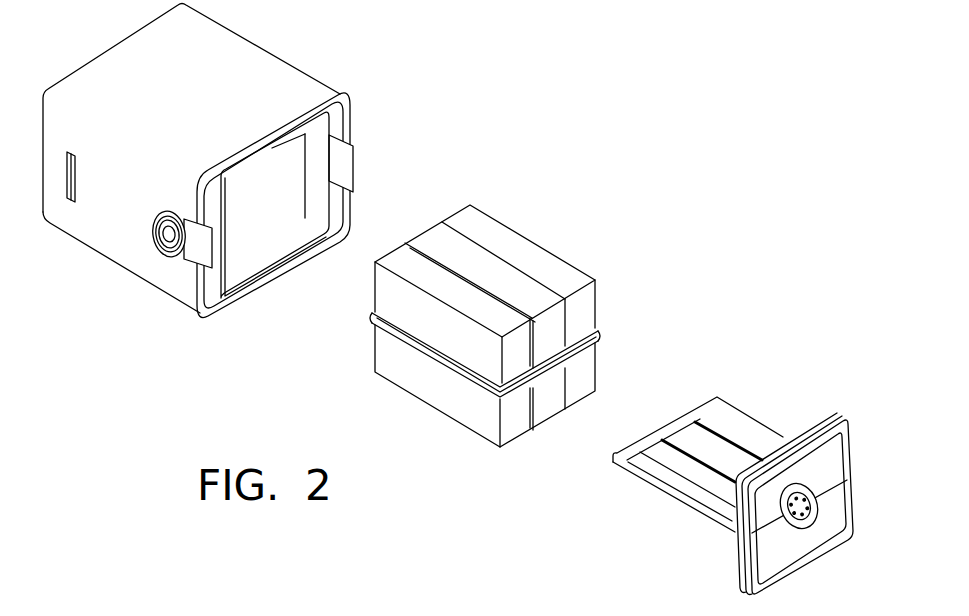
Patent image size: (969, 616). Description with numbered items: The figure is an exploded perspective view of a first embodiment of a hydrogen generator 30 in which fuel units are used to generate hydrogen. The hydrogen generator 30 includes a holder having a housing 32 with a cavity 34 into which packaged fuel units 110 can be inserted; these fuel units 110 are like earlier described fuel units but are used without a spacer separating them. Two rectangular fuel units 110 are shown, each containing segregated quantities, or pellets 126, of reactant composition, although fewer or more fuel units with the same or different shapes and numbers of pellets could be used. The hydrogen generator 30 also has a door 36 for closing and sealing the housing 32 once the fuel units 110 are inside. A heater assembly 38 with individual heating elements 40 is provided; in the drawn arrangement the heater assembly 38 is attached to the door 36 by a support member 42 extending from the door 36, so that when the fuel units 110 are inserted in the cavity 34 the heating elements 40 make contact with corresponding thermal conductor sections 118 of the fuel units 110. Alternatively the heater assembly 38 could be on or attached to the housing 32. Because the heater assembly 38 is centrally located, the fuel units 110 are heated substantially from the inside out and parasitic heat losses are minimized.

The hydrogen generator 30 is at (314, 38).
The housing 32 is at (347, 122).
The cavity 34 is at (266, 222).
The fuel units 110 is at (521, 227).
The pellets 126 is at (387, 292).
The thermal conductor sections 118 is at (507, 392).
The support member 42 is at (683, 418).
The heater assembly 38 is at (744, 407).
The heating elements 40 is at (690, 438).
The door 36 is at (745, 550).